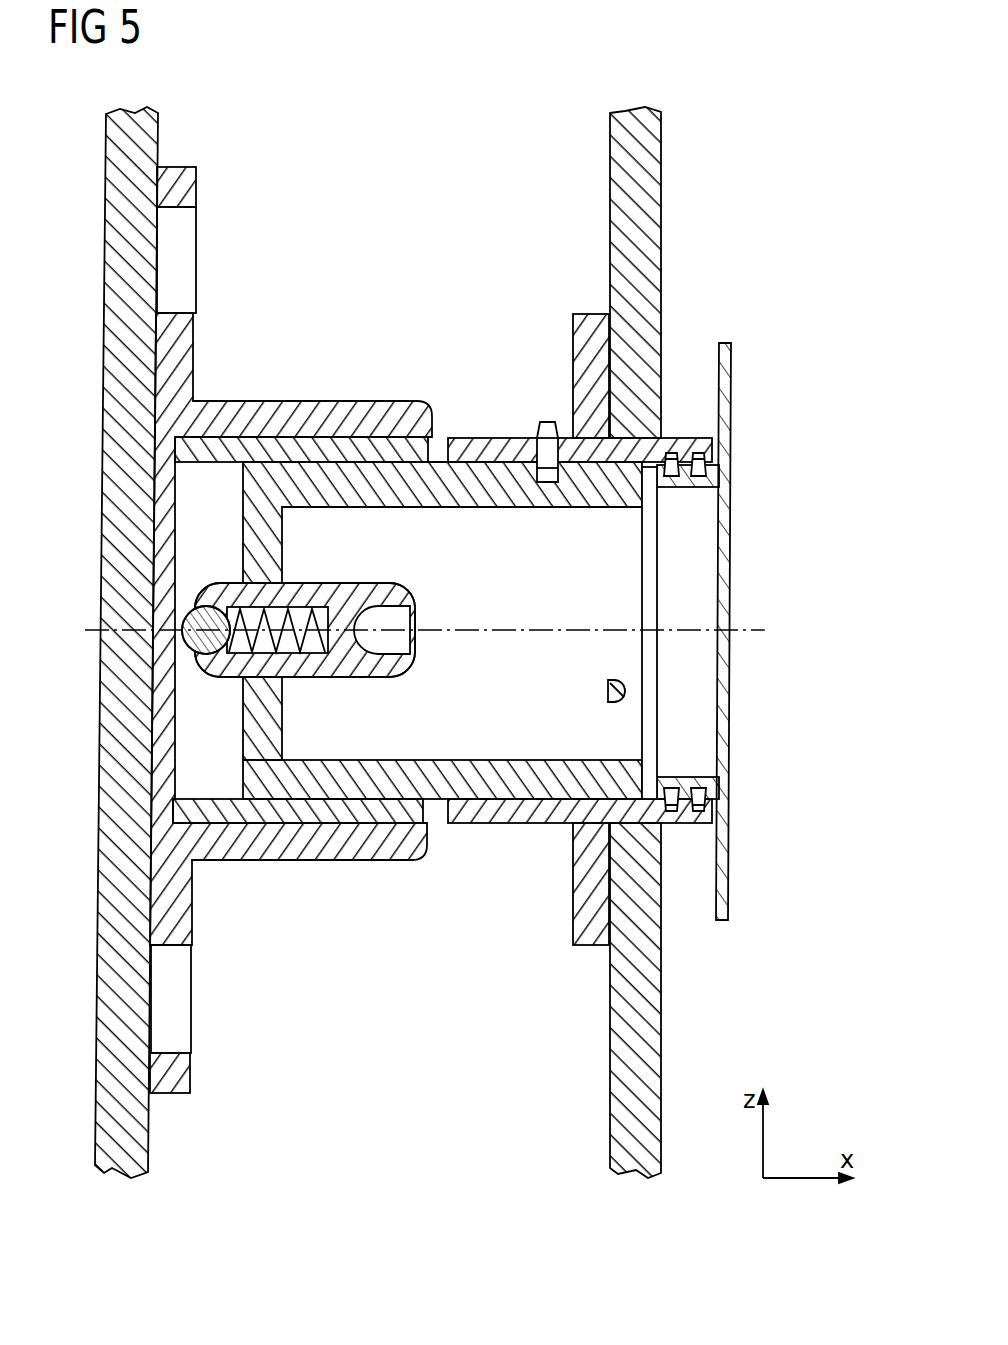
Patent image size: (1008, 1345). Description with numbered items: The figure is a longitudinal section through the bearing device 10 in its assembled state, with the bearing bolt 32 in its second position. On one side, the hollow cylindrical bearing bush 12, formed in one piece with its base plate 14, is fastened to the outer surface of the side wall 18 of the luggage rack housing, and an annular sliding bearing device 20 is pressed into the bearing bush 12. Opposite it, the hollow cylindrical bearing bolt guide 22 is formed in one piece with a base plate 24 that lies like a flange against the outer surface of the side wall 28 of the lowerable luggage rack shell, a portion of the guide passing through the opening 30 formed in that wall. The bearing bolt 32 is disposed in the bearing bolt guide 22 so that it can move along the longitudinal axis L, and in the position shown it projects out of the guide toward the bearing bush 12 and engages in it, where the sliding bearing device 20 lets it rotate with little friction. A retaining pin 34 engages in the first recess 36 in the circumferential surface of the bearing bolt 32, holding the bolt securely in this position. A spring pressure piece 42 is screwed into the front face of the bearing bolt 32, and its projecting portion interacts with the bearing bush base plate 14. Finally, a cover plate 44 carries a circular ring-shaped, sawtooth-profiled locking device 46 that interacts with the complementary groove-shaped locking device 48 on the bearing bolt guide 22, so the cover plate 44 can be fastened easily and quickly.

The bearing device 10 is at (778, 360).
The bearing bush 12 is at (300, 416).
The base plate 14 is at (187, 188).
The side wall 18 is at (118, 212).
The sliding bearing device 20 is at (222, 455).
The bearing bolt guide 22 is at (488, 441).
The base plate 24 is at (587, 330).
The side wall 28 is at (650, 192).
The opening 30 is at (660, 823).
The bearing bolt 32 is at (428, 790).
The retaining pin 34 is at (547, 436).
The first recess 36 is at (546, 484).
The spring pressure piece 42 is at (212, 660).
The cover plate 44 is at (735, 525).
The locking device 46 is at (706, 463).
The complementary locking device 48 is at (712, 812).
The longitudinal axis L is at (760, 625).